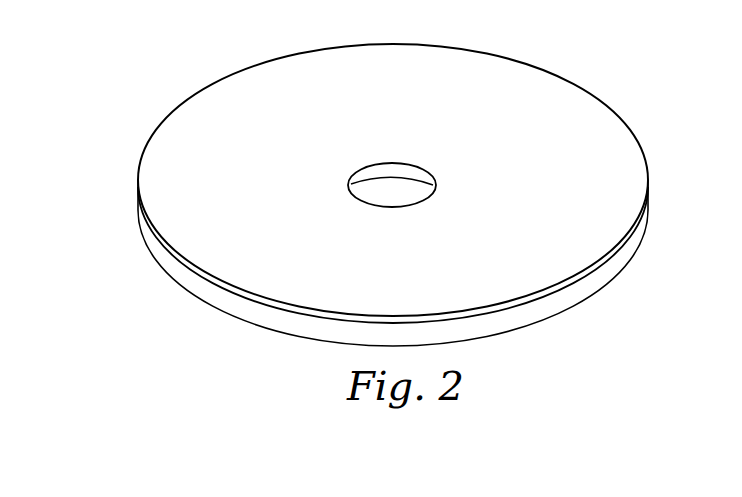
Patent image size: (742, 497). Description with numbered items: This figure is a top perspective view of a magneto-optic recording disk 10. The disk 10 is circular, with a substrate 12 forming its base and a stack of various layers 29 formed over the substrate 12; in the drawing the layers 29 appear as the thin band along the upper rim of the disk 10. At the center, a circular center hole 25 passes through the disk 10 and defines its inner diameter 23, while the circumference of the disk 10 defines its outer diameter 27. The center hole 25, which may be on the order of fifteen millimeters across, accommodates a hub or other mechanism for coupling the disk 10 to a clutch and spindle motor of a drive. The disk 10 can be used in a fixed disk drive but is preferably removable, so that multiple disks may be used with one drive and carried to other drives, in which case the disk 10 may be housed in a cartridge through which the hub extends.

The disk 10 is at (634, 91).
The substrate 12 is at (267, 317).
The inner diameter 23 is at (385, 176).
The center hole 25 is at (396, 206).
The outer diameter 27 is at (648, 157).
The layers 29 is at (582, 285).